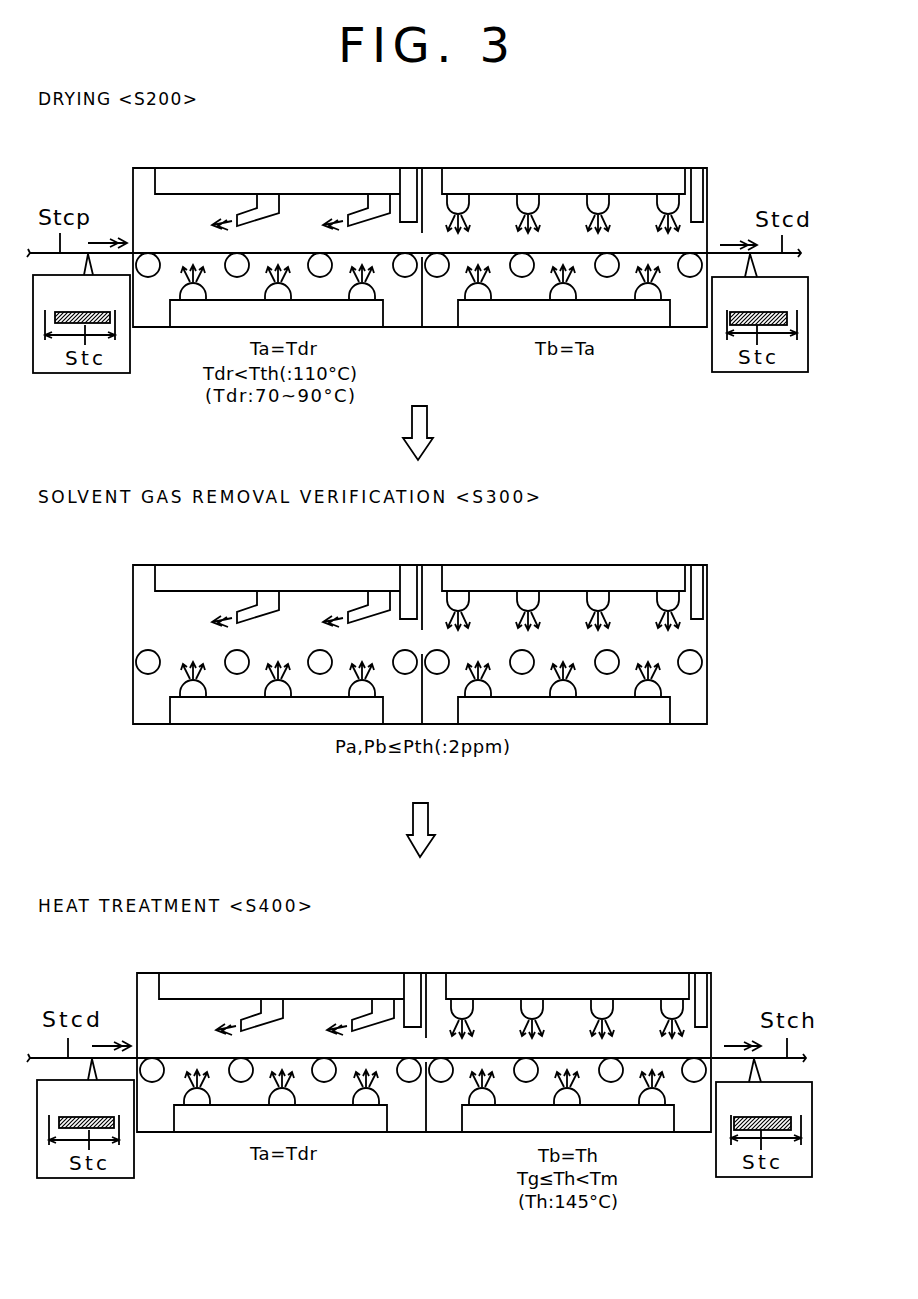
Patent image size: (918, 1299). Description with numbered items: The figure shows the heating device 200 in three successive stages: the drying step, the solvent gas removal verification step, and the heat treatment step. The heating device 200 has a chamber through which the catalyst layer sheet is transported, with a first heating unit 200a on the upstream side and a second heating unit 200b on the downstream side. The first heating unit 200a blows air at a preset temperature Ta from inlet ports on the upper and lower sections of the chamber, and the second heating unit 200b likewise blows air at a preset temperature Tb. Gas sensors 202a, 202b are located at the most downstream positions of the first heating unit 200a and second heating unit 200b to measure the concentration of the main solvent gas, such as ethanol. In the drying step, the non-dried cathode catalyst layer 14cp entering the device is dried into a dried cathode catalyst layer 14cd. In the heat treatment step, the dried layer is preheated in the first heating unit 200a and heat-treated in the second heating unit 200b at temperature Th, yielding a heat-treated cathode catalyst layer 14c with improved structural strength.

The heating device 200 is at (387, 625).
The first heating unit 200a is at (279, 585).
The second heating unit 200b is at (565, 587).
The gas sensor 202a is at (411, 580).
The gas sensor 202b is at (699, 580).
The non-dried cathode catalyst layer 14cp is at (83, 716).
The dried cathode catalyst layer 14cd is at (760, 313).
The heat-treated cathode catalyst layer 14c is at (764, 1118).